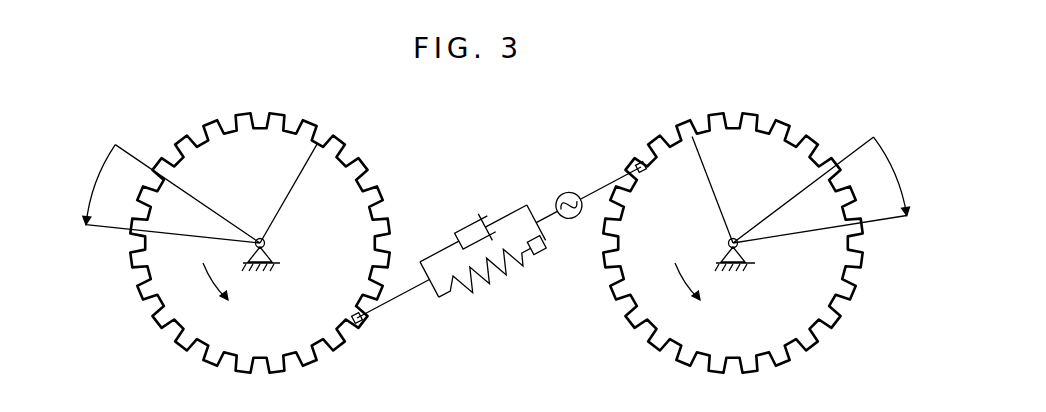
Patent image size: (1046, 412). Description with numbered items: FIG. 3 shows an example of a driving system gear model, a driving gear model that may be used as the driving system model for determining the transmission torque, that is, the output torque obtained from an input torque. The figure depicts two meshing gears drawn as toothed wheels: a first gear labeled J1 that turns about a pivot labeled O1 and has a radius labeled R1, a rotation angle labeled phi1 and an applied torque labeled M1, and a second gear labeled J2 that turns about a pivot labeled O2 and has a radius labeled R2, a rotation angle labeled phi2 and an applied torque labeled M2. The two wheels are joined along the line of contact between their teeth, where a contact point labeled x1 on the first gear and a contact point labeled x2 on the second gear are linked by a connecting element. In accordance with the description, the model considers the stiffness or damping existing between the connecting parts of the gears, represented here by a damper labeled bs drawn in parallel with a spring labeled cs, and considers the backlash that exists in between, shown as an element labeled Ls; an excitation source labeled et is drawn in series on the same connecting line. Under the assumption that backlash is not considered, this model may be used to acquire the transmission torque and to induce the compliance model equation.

The first gear (moment of inertia J1) J1 is at (259, 242).
The first gear pivot center O1 is at (266, 253).
The first gear radius R1 is at (289, 193).
The first gear rotation angle phi1 is at (171, 194).
The first gear torque M1 is at (205, 283).
The second gear (moment of inertia J2) J2 is at (732, 242).
The second gear pivot center O2 is at (729, 250).
The second gear radius R2 is at (714, 190).
The second gear rotation angle phi2 is at (821, 190).
The second gear torque M2 is at (678, 285).
The first gear contact point displacement x1 is at (362, 330).
The second gear contact point displacement x2 is at (632, 156).
The mesh damper bs is at (474, 227).
The mesh spring stiffness cs is at (484, 278).
The backlash element Ls is at (541, 262).
The transmission error excitation e(t) et is at (566, 197).